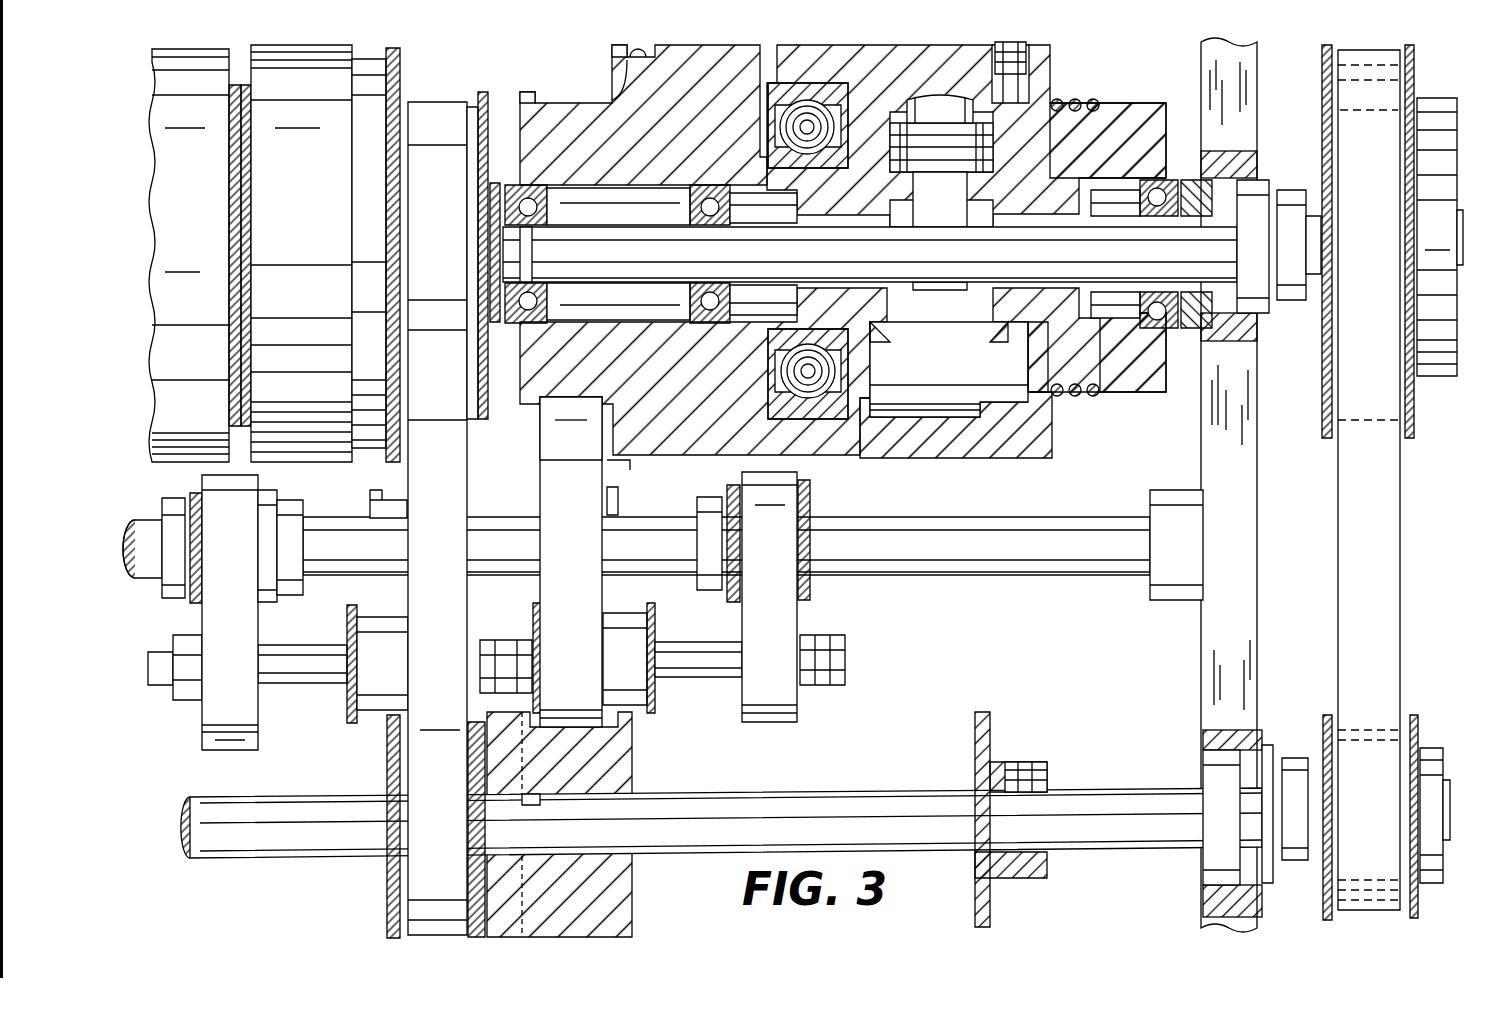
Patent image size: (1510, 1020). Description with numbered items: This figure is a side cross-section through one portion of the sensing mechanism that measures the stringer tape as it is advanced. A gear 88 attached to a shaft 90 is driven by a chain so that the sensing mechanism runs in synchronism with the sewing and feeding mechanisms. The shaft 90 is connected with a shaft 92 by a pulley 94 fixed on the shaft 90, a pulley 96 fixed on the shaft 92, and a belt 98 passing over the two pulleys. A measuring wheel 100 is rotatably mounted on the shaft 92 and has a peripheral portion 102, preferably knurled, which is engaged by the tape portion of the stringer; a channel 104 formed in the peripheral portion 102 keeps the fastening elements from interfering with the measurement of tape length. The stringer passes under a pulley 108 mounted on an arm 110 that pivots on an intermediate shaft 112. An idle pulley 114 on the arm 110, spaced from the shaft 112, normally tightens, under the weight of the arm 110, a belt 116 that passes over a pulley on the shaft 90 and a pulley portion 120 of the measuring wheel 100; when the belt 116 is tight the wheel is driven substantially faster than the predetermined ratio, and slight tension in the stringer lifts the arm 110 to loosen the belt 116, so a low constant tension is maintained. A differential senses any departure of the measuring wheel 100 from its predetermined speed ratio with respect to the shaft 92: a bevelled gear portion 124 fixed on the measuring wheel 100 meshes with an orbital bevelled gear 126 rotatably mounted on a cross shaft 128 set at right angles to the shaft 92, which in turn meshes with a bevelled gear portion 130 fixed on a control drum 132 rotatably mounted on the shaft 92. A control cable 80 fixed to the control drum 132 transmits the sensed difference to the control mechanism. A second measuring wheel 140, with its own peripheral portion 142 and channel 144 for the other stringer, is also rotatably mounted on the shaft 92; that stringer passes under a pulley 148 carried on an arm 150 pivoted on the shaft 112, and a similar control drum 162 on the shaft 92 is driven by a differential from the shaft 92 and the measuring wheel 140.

The control cable 80 is at (1070, 100).
The gear 88 is at (990, 778).
The shaft 90 is at (868, 797).
The shaft 92 is at (1088, 262).
The pulley 94 is at (1323, 748).
The pulley 96 is at (1320, 378).
The belt 98 is at (1368, 485).
The measuring wheel 100 is at (618, 68).
The peripheral portion 102 is at (712, 55).
The channel 104 is at (618, 88).
The pulley 108 is at (642, 530).
The arm 110 is at (780, 617).
The intermediate shaft 112 is at (370, 548).
The idle pulley 114 is at (630, 690).
The belt 116 is at (592, 596).
The pulley portion 120 is at (541, 410).
The bevelled gear portion 124 is at (857, 292).
The orbital bevelled gear 126 is at (1041, 85).
The cross shaft 128 is at (933, 225).
The bevelled gear portion 130 is at (1020, 300).
The control drum 132 is at (1145, 108).
The measuring wheel 140 is at (414, 64).
The peripheral portion 142 is at (271, 460).
The channel 144 is at (347, 456).
The pulley 148 is at (370, 500).
The arm 150 is at (230, 626).
The control drum 162 is at (190, 452).